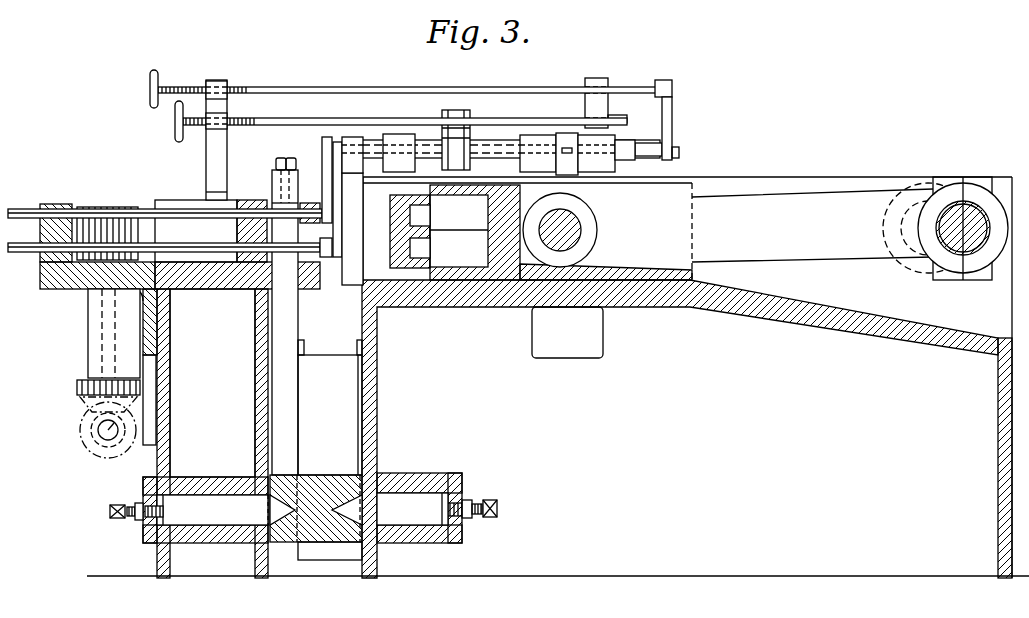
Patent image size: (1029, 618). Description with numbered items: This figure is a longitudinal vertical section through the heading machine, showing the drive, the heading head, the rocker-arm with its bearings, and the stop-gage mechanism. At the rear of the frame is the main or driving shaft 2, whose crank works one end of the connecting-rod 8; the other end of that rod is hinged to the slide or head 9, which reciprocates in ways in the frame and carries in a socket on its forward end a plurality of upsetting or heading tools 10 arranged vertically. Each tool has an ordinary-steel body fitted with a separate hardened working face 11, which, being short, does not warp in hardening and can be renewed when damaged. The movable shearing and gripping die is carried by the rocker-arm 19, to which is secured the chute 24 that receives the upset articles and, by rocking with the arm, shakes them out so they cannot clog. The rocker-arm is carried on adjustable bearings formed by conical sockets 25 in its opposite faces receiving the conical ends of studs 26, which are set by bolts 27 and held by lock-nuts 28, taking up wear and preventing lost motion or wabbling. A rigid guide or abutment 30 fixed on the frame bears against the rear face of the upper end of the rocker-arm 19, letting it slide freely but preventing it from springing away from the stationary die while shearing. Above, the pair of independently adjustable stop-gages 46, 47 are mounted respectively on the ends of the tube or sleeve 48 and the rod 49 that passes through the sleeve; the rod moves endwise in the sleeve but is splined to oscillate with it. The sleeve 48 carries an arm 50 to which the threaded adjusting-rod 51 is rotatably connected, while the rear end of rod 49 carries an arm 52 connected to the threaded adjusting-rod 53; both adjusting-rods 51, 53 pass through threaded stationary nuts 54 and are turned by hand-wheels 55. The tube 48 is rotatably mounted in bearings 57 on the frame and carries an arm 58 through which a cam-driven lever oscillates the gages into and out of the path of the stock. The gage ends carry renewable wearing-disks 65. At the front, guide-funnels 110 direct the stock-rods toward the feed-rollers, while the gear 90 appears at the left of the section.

The main or driving shaft 2 is at (964, 232).
The connecting-rod 8 is at (757, 228).
The slide or head 9 is at (500, 287).
The upsetting or heading tools or punches 10 is at (561, 232).
The hardened working face 11 is at (392, 236).
The rocker-arm 19 is at (285, 313).
The chute 24 is at (330, 450).
The conical sockets 25 is at (300, 492).
The studs 26 is at (225, 517).
The bolts 27 is at (120, 505).
The lock-nuts 28 is at (140, 517).
The guide or abutment 30 is at (306, 258).
The stop-gage 46 is at (336, 228).
The stop-gage 47 is at (327, 182).
The tube or sleeve 48 is at (372, 142).
The rod 49 is at (334, 157).
The arm 50 is at (465, 138).
The adjusting-rod 51 is at (528, 122).
The arm 52 is at (666, 119).
The adjusting-rod 53 is at (518, 90).
The threaded stationary sleeves or nuts 54 is at (222, 86).
The hand-wheels 55 is at (175, 131).
The bearings 57 is at (410, 138).
The arm 58 is at (566, 141).
The renewable wearing-disks or faces 65 is at (328, 249).
The gear 90 is at (112, 210).
The guide-funnels 110 is at (69, 206).